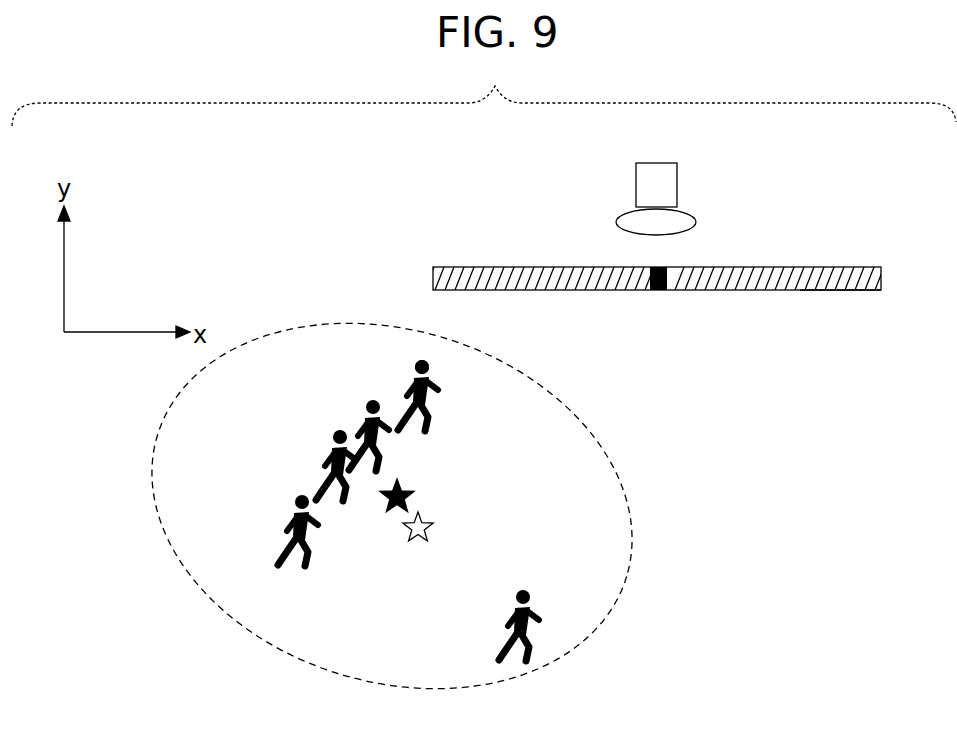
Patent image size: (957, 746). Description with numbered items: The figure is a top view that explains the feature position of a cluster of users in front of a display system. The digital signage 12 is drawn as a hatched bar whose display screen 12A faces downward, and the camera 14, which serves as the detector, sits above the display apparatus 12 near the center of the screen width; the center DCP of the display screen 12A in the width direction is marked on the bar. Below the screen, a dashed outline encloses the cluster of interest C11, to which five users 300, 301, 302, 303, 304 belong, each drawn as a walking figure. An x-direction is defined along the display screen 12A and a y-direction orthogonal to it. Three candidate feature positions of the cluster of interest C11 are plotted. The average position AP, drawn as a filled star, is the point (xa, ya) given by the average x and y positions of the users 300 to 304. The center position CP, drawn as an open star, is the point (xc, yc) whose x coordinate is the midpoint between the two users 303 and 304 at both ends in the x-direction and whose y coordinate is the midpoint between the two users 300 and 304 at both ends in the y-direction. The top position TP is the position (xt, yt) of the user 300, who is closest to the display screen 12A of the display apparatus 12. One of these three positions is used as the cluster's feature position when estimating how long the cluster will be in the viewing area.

The digital signage 12 is at (782, 267).
The display screen 12A is at (817, 291).
The camera 14 is at (677, 194).
The center of the display screen in the width direction DCP is at (660, 290).
The cluster of interest C11 is at (632, 545).
The user 300 is at (410, 381).
The user 301 is at (362, 424).
The user 302 is at (326, 466).
The user 303 is at (286, 531).
The user 304 is at (506, 647).
The top position TP is at (410, 380).
The average position AP is at (408, 488).
The center position CP is at (428, 522).